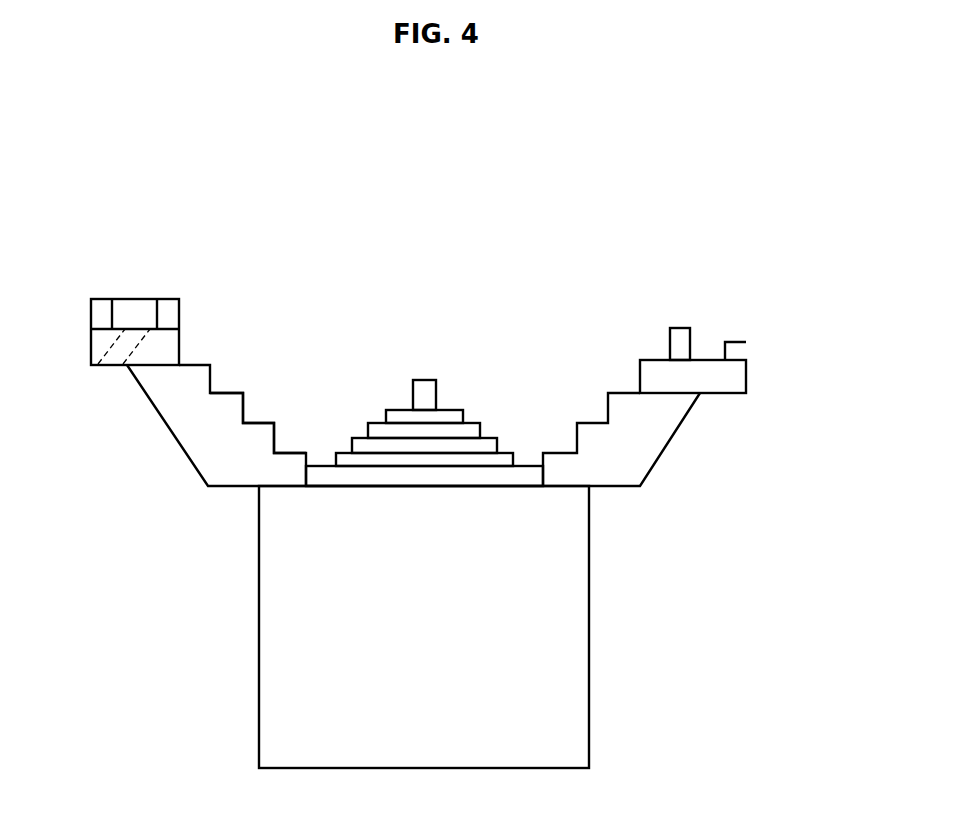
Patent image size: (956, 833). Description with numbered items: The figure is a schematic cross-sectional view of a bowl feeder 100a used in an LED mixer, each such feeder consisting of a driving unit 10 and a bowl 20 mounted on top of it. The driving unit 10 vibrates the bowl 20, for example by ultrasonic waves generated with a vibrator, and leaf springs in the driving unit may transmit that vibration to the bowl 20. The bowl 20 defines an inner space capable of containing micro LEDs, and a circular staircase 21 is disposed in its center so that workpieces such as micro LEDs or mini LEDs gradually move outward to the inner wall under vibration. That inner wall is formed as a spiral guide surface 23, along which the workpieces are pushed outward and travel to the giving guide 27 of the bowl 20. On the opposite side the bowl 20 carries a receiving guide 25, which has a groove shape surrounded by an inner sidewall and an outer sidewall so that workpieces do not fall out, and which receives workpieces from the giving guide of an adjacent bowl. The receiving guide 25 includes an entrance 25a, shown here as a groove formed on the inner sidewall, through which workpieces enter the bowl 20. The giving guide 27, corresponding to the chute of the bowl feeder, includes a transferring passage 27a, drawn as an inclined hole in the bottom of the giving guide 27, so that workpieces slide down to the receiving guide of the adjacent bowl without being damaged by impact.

The bowl feeder 100a is at (789, 223).
The driving unit 10 is at (570, 642).
The bowl 20 is at (648, 443).
The circular staircase 21 is at (398, 408).
The spiral guide surface 23 is at (225, 392).
The receiving guide 25 is at (703, 350).
The entrance 25a is at (669, 356).
The giving guide 27 is at (131, 316).
The transferring passage 27a is at (111, 353).